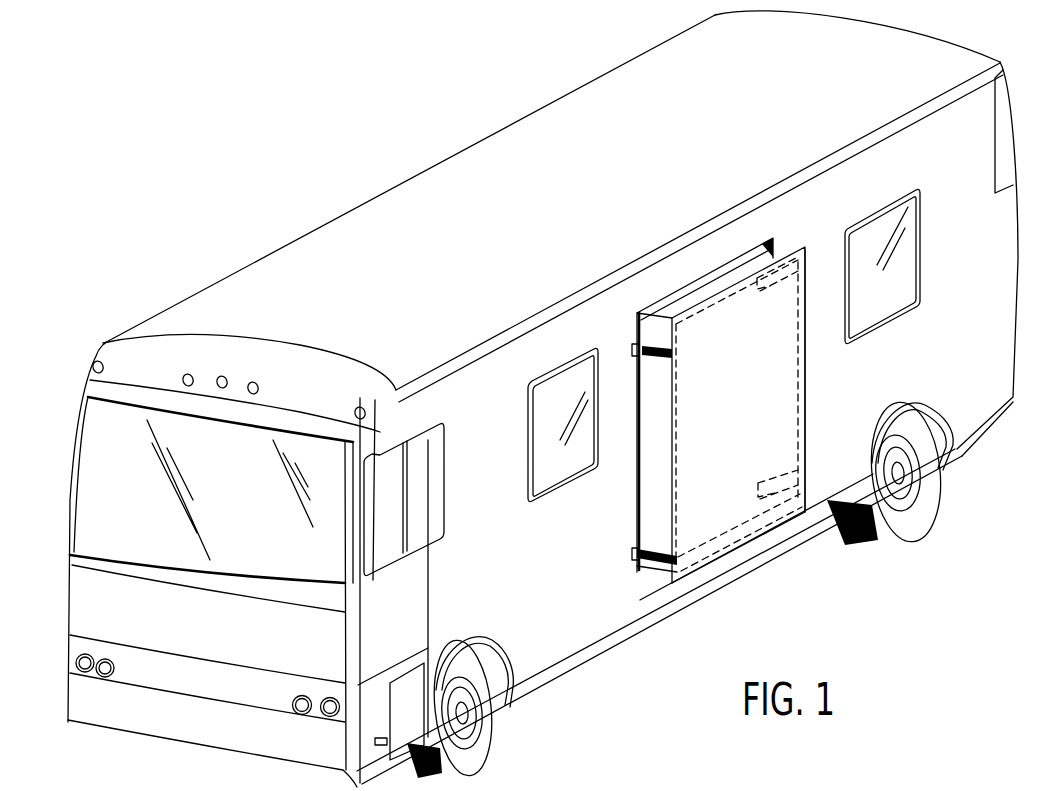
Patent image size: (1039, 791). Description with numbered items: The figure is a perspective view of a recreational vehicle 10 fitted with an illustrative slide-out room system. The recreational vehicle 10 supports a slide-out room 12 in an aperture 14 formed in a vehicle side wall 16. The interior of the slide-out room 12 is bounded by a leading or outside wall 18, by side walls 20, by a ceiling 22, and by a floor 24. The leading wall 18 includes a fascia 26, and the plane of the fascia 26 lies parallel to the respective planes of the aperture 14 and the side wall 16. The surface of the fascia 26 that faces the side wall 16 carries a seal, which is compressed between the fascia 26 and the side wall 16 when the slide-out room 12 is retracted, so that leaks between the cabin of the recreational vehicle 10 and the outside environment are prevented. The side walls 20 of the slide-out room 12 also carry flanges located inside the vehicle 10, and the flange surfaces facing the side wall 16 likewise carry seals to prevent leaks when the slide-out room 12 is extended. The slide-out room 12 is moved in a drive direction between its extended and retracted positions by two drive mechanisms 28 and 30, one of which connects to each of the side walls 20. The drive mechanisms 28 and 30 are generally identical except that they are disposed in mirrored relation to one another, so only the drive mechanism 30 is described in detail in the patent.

The recreational vehicle 10 is at (258, 140).
The slide-out room 12 is at (806, 421).
The aperture 14 is at (708, 280).
The vehicle side wall 16 is at (551, 575).
The leading wall 18 is at (748, 424).
The side walls 20 is at (803, 383).
The ceiling 22 is at (678, 300).
The floor 24 is at (657, 562).
The fascia 26 is at (742, 547).
The drive mechanism 28 is at (624, 343).
The drive mechanism 30 is at (797, 265).